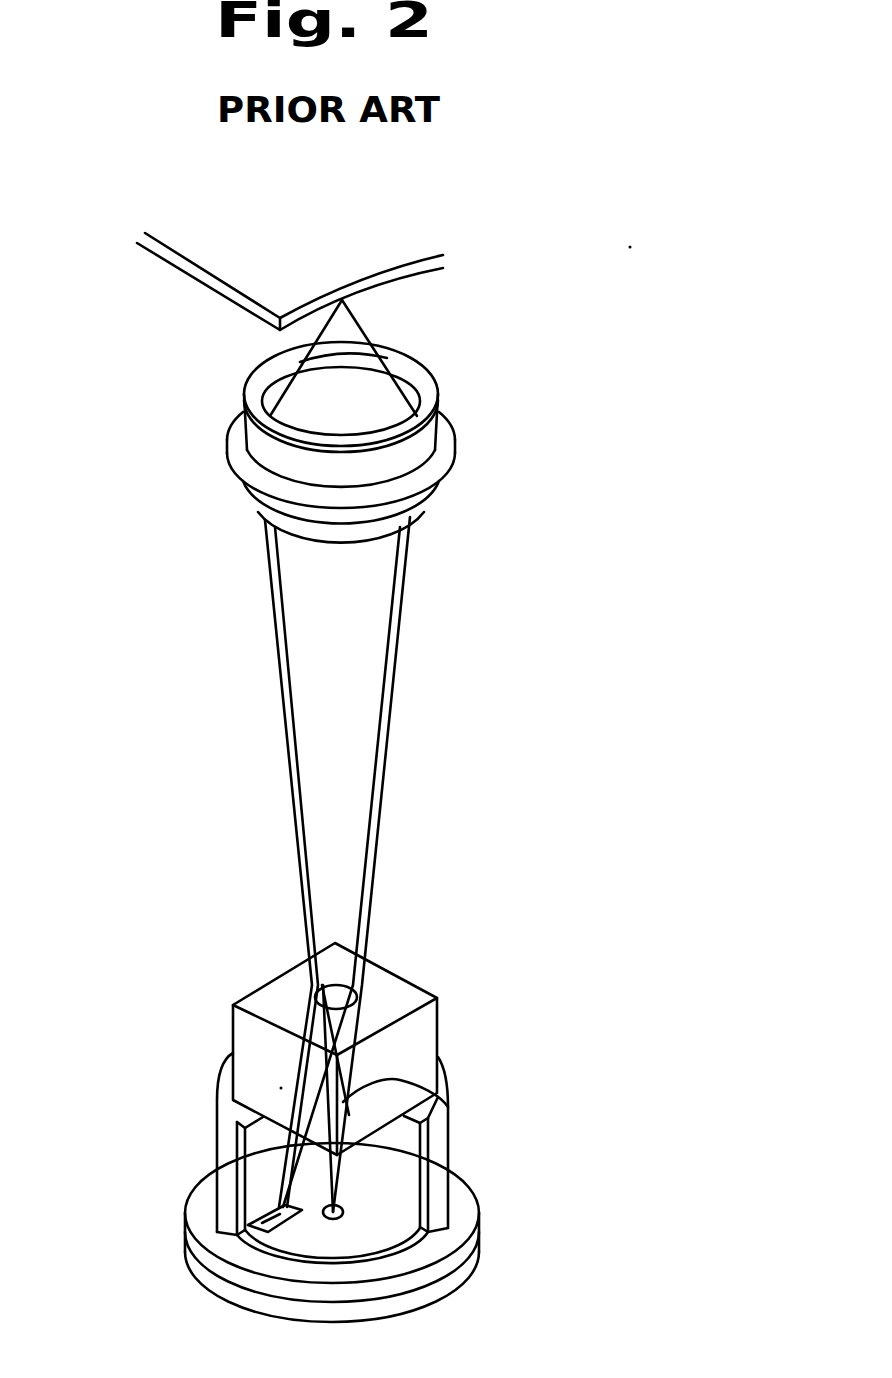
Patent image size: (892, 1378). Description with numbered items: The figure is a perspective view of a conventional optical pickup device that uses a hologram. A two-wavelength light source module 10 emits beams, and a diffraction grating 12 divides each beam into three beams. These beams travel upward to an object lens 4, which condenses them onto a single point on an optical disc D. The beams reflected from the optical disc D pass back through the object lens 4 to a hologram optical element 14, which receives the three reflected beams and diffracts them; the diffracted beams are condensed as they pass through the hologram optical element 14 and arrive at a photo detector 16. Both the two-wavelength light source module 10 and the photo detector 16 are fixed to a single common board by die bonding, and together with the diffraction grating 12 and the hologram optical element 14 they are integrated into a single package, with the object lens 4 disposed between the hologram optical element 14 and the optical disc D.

The optical disc D is at (207, 245).
The object lens 4 is at (417, 447).
The hologram optical element 14 is at (387, 1002).
The diffraction grating 12 is at (440, 1105).
The two-wavelength light source module 10 is at (342, 1210).
The photo detector 16 is at (268, 1226).